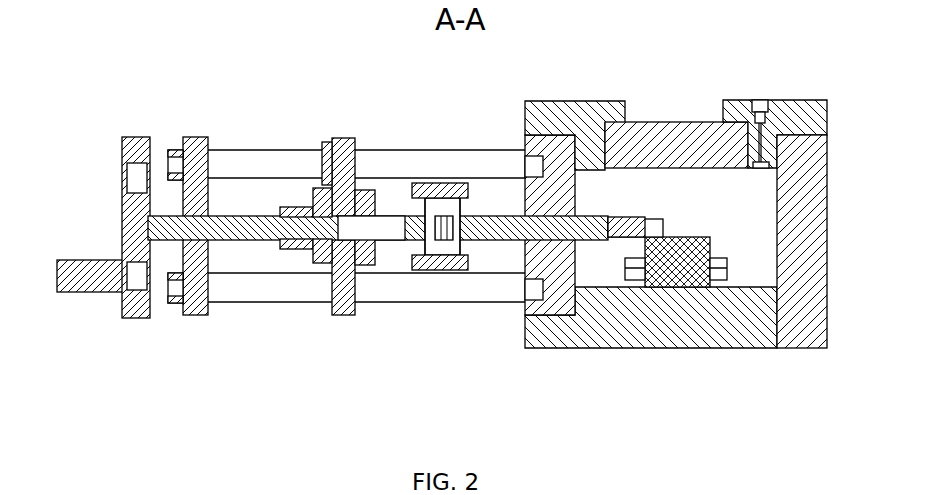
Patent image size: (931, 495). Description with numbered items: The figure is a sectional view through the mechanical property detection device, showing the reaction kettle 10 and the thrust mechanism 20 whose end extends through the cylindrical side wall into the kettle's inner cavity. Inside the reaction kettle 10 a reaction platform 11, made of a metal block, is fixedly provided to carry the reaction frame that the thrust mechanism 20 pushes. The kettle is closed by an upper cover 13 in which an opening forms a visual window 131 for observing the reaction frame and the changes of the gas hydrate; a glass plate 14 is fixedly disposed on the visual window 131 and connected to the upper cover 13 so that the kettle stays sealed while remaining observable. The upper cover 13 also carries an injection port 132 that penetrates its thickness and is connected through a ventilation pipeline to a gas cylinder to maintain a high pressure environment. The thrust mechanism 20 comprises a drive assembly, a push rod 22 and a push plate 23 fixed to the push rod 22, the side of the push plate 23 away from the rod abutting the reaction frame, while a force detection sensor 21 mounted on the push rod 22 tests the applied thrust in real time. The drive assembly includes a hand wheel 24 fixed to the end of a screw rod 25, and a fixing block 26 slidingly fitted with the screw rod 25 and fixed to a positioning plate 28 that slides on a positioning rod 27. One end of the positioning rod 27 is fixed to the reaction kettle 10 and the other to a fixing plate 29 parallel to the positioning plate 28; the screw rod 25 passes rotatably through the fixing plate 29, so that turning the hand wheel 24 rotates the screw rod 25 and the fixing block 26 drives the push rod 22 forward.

The reaction kettle 10 is at (518, 352).
The reaction platform 11 is at (695, 270).
The upper cover 13 is at (560, 100).
The visual window 131 is at (627, 100).
The injection port 132 is at (759, 100).
The glass plate 14 is at (696, 146).
The thrust mechanism 20 is at (140, 122).
The force detection sensor 21 is at (447, 182).
The push rod 22 is at (490, 242).
The push plate 23 is at (623, 243).
The hand wheel 24 is at (105, 260).
The screw rod 25 is at (243, 241).
The fixing block 26 is at (313, 250).
The positioning rod 27 is at (267, 165).
The positioning plate 28 is at (341, 138).
The fixing plate 29 is at (190, 135).